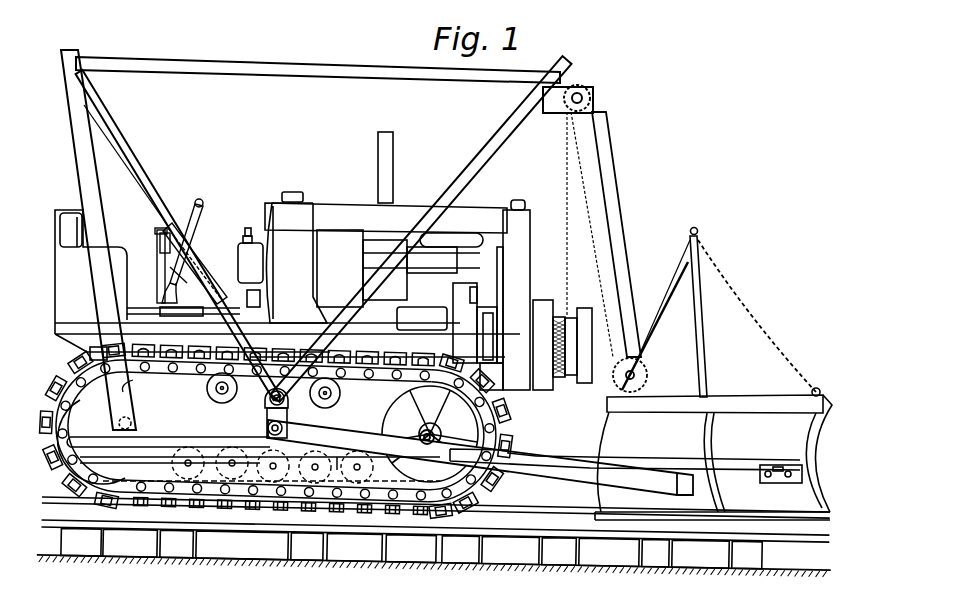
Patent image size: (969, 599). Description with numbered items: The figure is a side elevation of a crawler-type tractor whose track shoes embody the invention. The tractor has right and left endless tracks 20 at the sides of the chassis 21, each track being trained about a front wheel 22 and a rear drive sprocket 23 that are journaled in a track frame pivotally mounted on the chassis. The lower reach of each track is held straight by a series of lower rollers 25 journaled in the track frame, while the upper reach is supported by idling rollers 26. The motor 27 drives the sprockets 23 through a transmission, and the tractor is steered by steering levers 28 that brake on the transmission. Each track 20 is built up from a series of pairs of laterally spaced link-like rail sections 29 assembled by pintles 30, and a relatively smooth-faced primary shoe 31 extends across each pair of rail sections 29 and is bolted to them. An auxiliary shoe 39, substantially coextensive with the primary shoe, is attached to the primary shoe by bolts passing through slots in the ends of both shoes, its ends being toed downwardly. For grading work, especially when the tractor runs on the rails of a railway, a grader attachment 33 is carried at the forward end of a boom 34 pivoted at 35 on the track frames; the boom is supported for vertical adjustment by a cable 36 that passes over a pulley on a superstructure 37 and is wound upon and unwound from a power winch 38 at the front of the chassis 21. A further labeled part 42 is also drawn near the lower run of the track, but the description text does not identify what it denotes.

The endless tracks 20 is at (338, 482).
The chassis 21 is at (518, 385).
The front wheel 22 is at (492, 427).
The rear drive sprocket 23 is at (147, 370).
The lower rollers 25 is at (178, 452).
The idling rollers 26 is at (225, 398).
The motor 27 is at (387, 247).
The steering levers 28 is at (203, 201).
The rail sections 29 is at (458, 492).
The pintles 30 is at (174, 368).
The primary shoe 31 is at (260, 457).
The grader attachment 33 is at (745, 404).
The boom 34 is at (604, 512).
The boom pivot 35 is at (290, 440).
The cable 36 is at (616, 186).
The superstructure 37 is at (143, 181).
The power winch 38 is at (542, 303).
The auxiliary shoe 39 is at (150, 502).
The push arm 42 is at (460, 463).